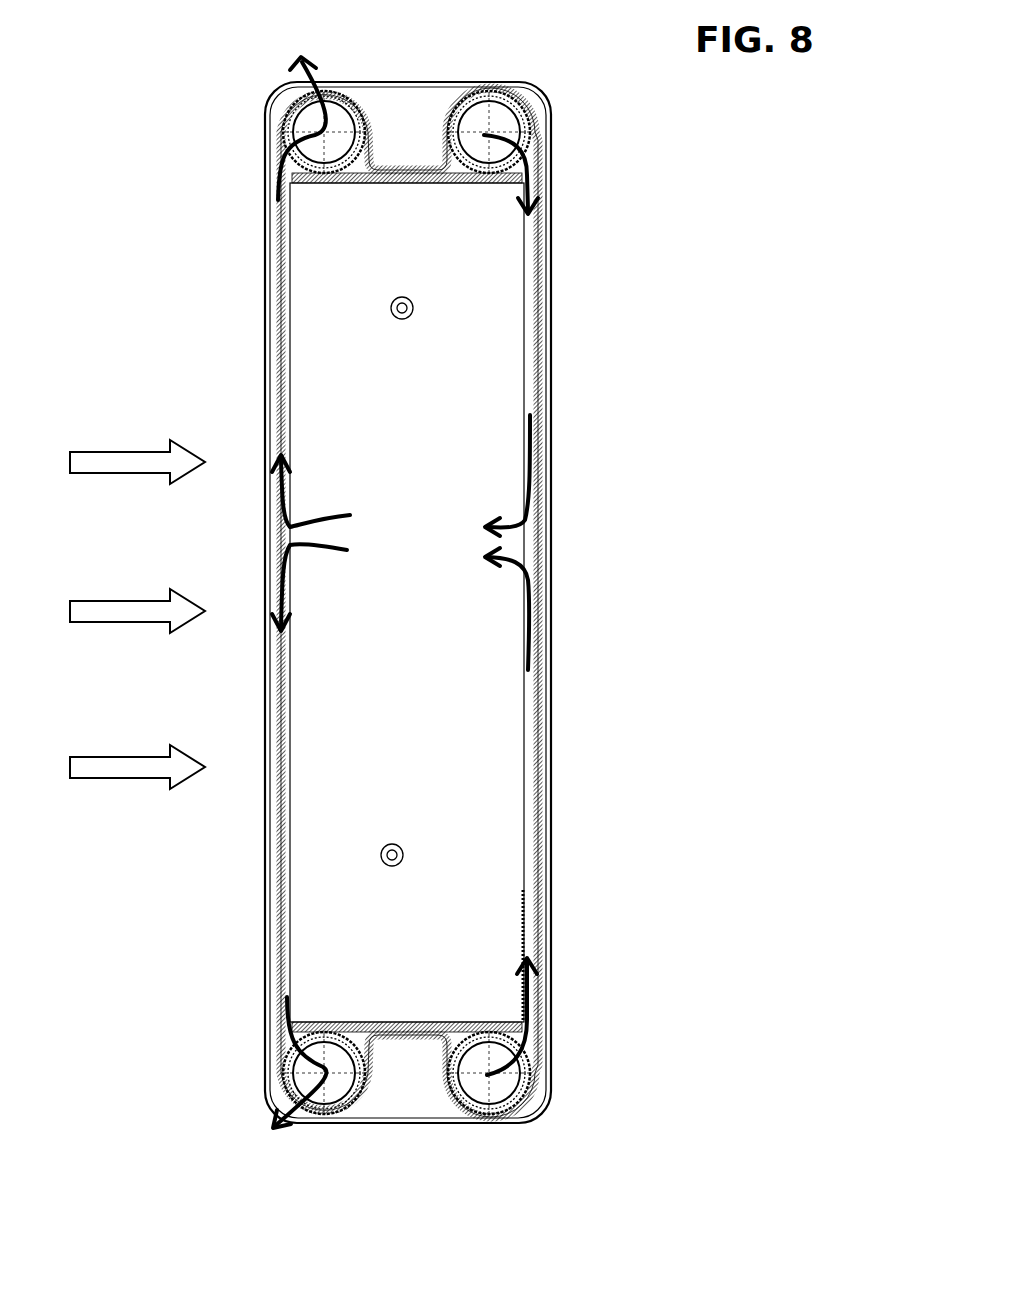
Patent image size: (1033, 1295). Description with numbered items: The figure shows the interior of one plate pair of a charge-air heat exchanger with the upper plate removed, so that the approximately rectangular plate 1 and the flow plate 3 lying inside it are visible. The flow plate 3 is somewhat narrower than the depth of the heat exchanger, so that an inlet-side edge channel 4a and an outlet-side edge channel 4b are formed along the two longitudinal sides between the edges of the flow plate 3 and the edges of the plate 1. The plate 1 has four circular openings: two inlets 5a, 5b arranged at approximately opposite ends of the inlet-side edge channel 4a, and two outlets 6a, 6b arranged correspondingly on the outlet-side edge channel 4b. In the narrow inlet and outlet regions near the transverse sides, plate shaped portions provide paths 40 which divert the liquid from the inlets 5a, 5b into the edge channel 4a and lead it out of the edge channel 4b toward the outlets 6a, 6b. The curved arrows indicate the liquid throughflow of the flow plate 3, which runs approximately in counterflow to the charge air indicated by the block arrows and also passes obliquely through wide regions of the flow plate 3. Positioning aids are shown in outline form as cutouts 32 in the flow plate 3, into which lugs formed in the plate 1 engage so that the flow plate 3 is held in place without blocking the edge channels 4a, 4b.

The plate 1 is at (550, 770).
The flow plate 3 is at (407, 602).
The inlet-side edge channel 4a is at (530, 538).
The outlet-side edge channel 4b is at (283, 532).
The inlet 5a is at (490, 114).
The inlet 5b is at (520, 1077).
The outlet 6a is at (303, 118).
The outlet 6b is at (337, 1093).
The cutout 32 is at (412, 322).
The path 40 is at (335, 173).